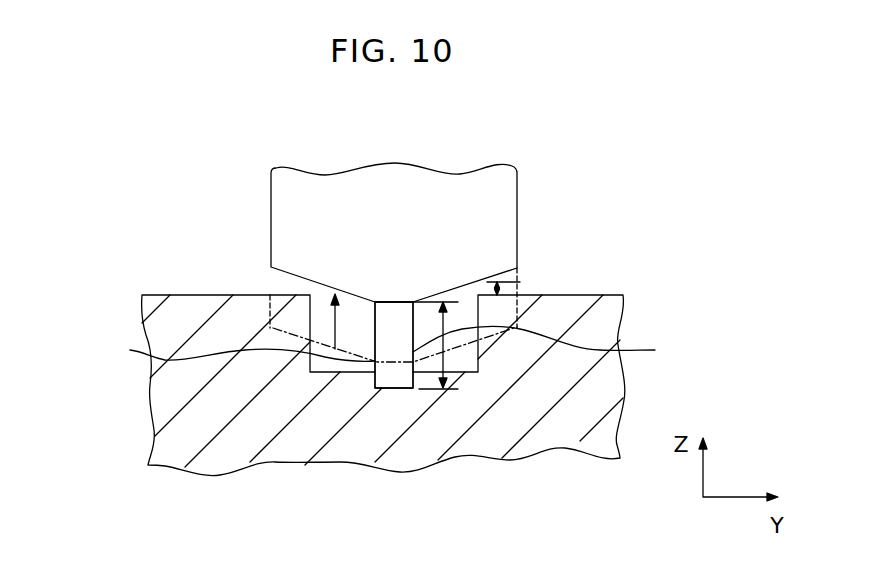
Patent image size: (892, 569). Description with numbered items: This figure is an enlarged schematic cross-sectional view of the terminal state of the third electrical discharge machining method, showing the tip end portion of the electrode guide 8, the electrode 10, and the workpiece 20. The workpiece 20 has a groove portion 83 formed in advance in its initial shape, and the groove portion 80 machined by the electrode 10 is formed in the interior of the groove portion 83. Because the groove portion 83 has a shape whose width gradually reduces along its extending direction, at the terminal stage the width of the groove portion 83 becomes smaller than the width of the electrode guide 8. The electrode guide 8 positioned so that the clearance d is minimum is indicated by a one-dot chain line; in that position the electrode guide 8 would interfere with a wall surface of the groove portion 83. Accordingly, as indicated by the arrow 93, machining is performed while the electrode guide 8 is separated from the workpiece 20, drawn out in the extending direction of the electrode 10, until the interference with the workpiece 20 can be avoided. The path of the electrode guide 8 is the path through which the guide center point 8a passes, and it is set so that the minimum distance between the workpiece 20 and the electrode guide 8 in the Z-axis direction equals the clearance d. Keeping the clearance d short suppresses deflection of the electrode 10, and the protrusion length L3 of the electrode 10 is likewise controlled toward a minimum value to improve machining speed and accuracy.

The electrode guide 8 is at (300, 200).
The guide center point 8a is at (393, 301).
The electrode 10 is at (396, 318).
The workpiece 20 is at (171, 455).
The groove portion 80 is at (397, 389).
The groove portion 83 is at (235, 350).
The arrow 93 is at (335, 330).
The clearance d is at (517, 282).
The protrusion length L3 is at (480, 344).